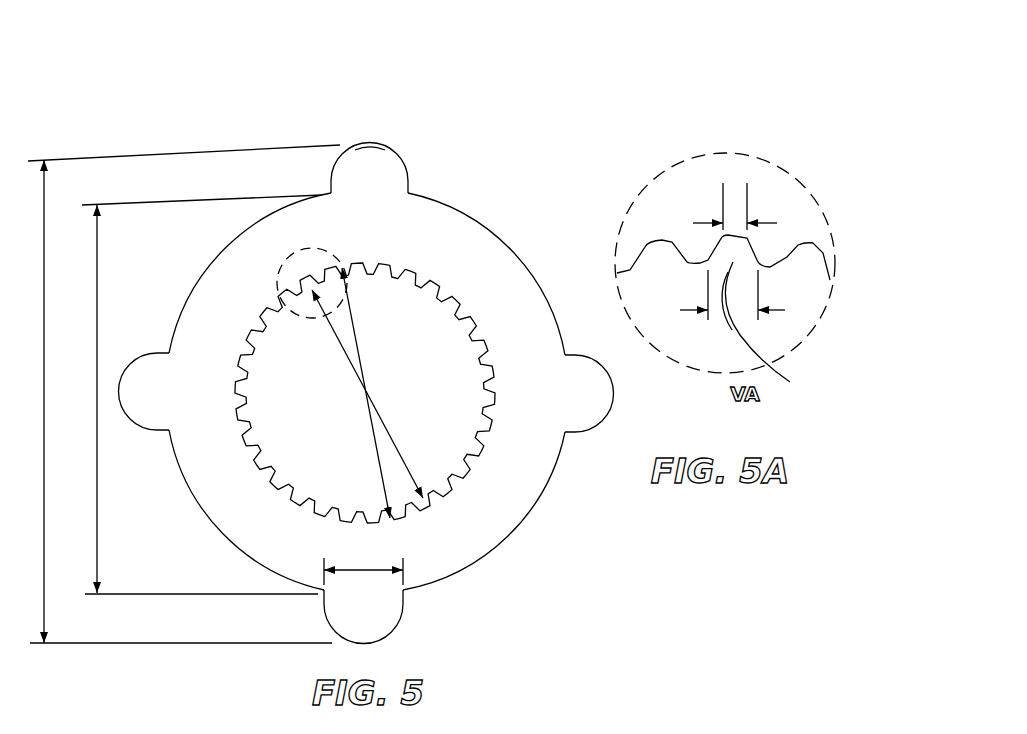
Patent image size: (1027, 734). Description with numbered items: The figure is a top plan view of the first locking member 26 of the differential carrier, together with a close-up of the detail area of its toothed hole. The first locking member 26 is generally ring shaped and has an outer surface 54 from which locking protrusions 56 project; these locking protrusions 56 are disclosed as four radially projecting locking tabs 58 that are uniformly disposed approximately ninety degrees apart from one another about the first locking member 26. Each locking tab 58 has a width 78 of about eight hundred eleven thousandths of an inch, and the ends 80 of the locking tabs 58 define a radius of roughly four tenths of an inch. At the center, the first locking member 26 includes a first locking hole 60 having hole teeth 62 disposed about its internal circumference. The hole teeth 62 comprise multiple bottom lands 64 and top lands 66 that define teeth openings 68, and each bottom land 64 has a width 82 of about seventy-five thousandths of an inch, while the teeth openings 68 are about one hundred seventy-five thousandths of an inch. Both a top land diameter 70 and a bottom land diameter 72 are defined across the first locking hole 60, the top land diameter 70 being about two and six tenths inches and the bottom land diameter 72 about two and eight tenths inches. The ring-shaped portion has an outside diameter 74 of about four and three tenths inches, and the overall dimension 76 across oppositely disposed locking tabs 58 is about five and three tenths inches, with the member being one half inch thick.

In FIG. 5, the first locking member 26 is at (400, 381).
In FIG. 5A, the first locking member 26 is at (685, 195).
In FIG. 5, the outer surface 54 is at (462, 212).
In FIG. 5, the locking protrusions 56 is at (407, 165).
In FIG. 5, the locking tabs 58 is at (380, 163).
In FIG. 5, the first locking hole 60 is at (406, 371).
In FIG. 5, the hole teeth 62 is at (488, 342).
In FIG. 5A, the hole teeth 62 is at (772, 256).
In FIG. 5A, the bottom lands 64 is at (812, 242).
In FIG. 5, the top lands 66 is at (253, 470).
In FIG. 5A, the top lands 66 is at (697, 270).
In FIG. 5A, the teeth openings 68 is at (790, 382).
In FIG. 5, the top land diameter 70 is at (346, 360).
In FIG. 5, the bottom land diameter 72 is at (356, 340).
In FIG. 5, the outside diameter 74 is at (98, 523).
In FIG. 5, the overall dimension 76 is at (46, 585).
In FIG. 5, the width 78 is at (365, 566).
In FIG. 5, the ends 80 is at (375, 143).
In FIG. 5A, the width 82 is at (733, 203).